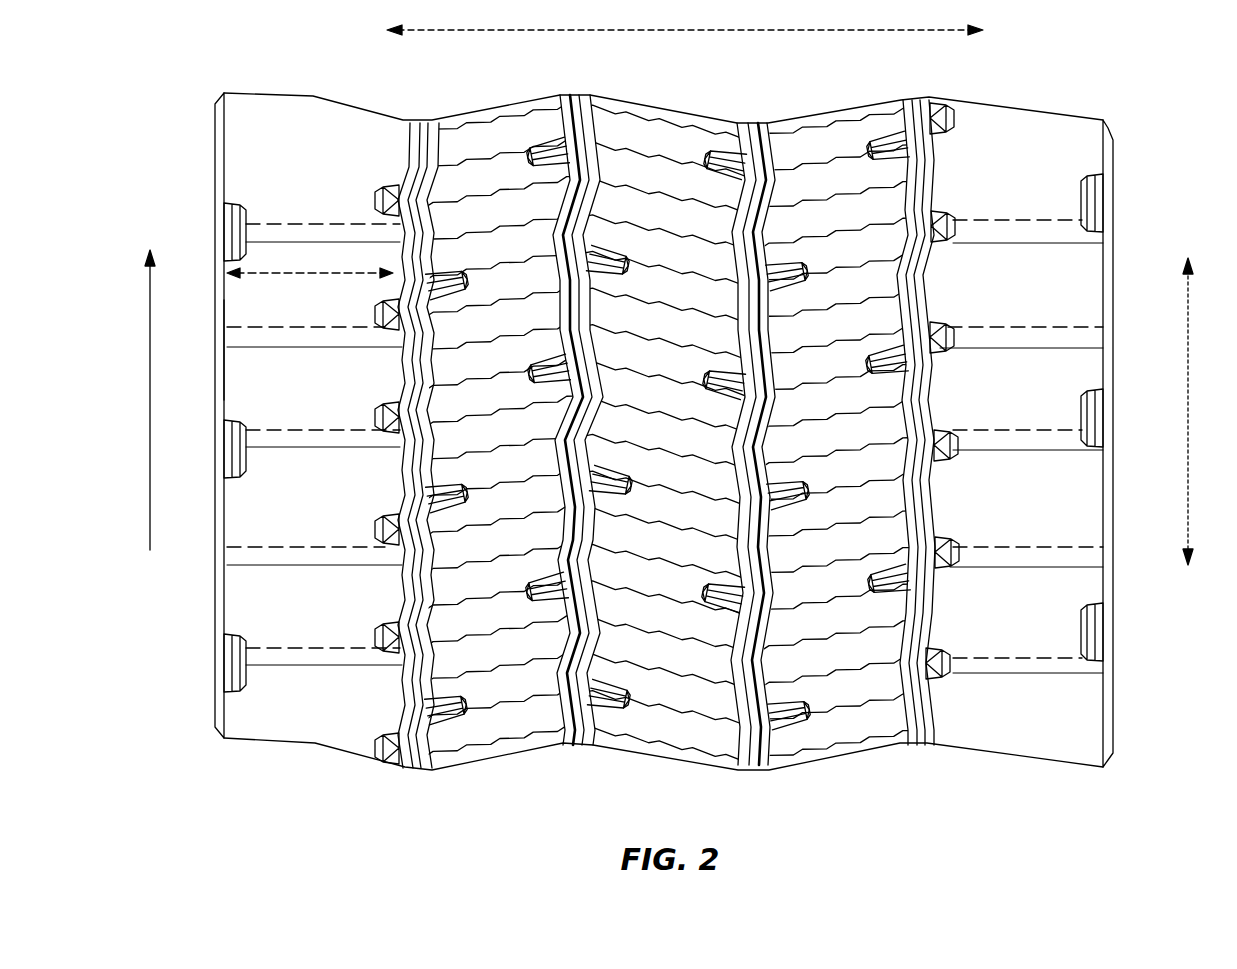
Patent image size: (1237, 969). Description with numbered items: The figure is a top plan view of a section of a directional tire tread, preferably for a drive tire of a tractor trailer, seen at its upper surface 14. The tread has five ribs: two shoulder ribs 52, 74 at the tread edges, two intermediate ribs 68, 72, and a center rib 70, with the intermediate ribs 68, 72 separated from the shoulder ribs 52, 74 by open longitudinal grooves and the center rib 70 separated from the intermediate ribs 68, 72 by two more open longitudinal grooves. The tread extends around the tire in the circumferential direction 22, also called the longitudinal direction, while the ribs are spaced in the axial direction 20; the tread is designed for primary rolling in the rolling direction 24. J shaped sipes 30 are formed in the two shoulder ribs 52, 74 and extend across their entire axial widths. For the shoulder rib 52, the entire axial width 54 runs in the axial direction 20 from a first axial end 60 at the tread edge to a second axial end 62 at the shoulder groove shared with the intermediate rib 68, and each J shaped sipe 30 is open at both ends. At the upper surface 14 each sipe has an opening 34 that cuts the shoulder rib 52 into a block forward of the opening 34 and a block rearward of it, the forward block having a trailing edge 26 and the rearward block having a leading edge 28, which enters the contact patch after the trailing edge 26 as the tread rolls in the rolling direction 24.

The upper surface 14 is at (1067, 138).
The axial direction 20 is at (687, 30).
The circumferential direction 22 is at (1188, 405).
The rolling direction 24 is at (150, 395).
The trailing edge 26 is at (333, 445).
The leading edge 28 is at (326, 448).
The J shaped sipe 30 is at (290, 567).
The opening 34 is at (355, 567).
The shoulder rib 52 is at (237, 148).
The entire axial width 54 is at (310, 277).
The first axial end 60 is at (223, 348).
The second axial end 62 is at (398, 350).
The intermediate rib 68 is at (505, 725).
The center rib 70 is at (672, 725).
The intermediate rib 72 is at (843, 725).
The shoulder rib 74 is at (1020, 725).